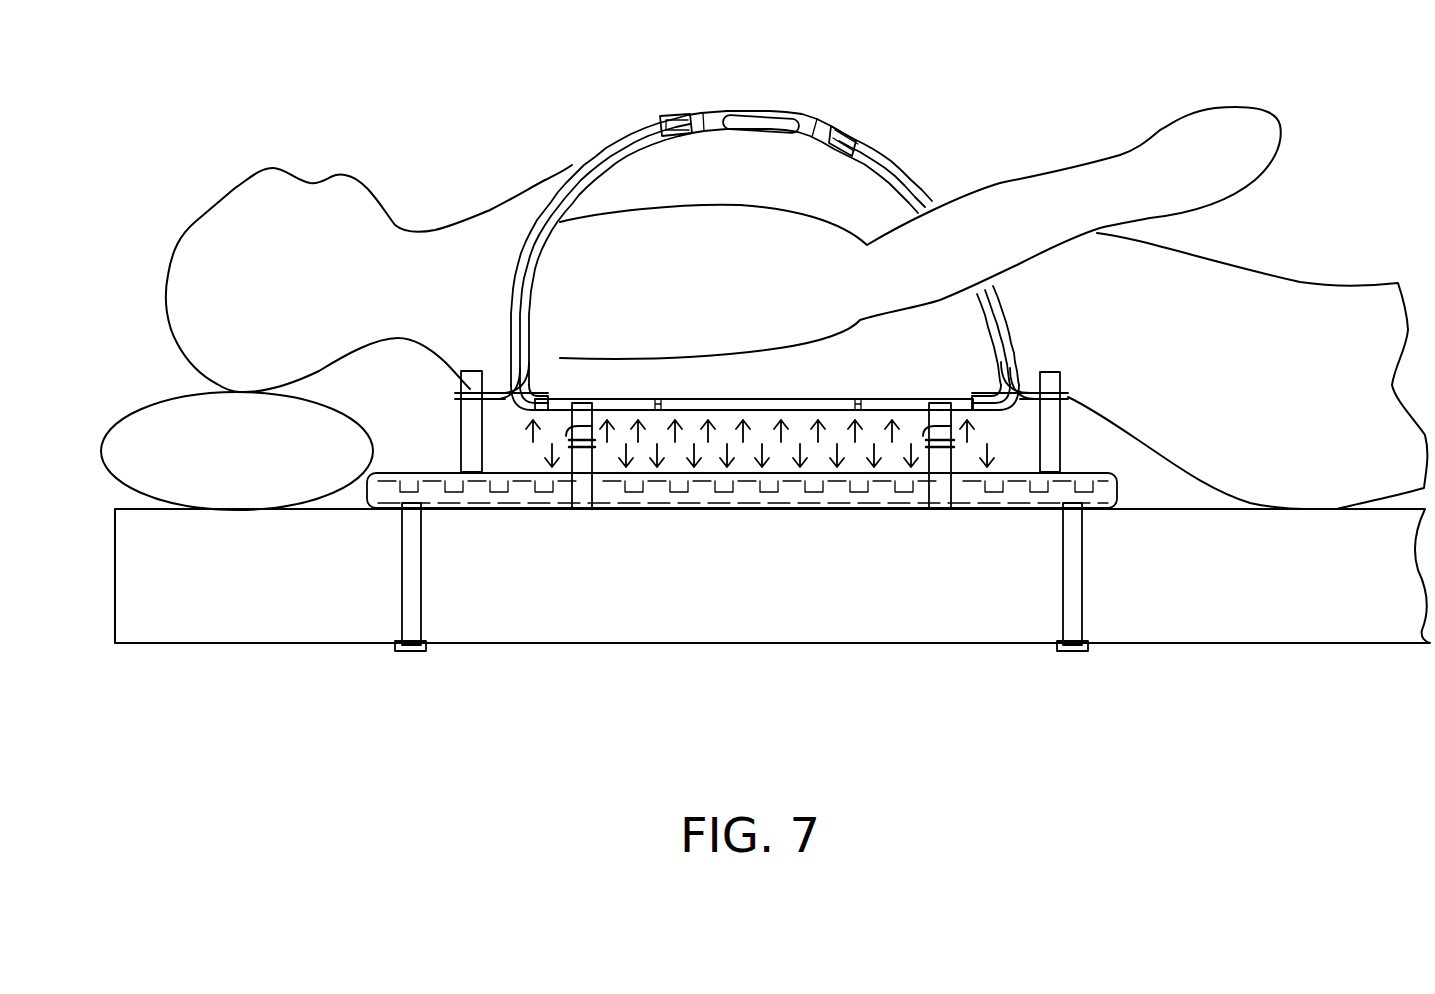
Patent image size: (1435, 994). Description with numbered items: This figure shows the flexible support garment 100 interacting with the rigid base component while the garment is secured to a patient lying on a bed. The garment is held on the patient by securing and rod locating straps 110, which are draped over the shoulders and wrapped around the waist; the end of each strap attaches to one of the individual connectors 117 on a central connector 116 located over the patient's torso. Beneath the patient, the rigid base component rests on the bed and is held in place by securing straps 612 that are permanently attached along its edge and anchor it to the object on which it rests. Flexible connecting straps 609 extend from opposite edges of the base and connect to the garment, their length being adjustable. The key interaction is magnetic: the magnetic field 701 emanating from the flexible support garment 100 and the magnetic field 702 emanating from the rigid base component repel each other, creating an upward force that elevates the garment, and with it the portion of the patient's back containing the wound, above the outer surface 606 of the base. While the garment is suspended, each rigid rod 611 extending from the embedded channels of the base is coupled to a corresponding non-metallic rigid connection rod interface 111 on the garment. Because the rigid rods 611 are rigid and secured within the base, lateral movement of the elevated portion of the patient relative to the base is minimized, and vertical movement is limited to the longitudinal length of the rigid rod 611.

The flexible support garment 100 is at (697, 402).
The securing and rod locating straps 110 is at (562, 208).
The non-metallic rigid connection rod interface 111 is at (457, 397).
The central connector 116 is at (760, 112).
The individual connectors 117 is at (690, 108).
The outer surface 606 is at (865, 495).
The flexible connecting straps 609 is at (583, 492).
The rigid rod 611 is at (455, 437).
The securing straps 612 is at (410, 597).
The magnetic field 701 is at (643, 438).
The magnetic field 702 is at (742, 462).